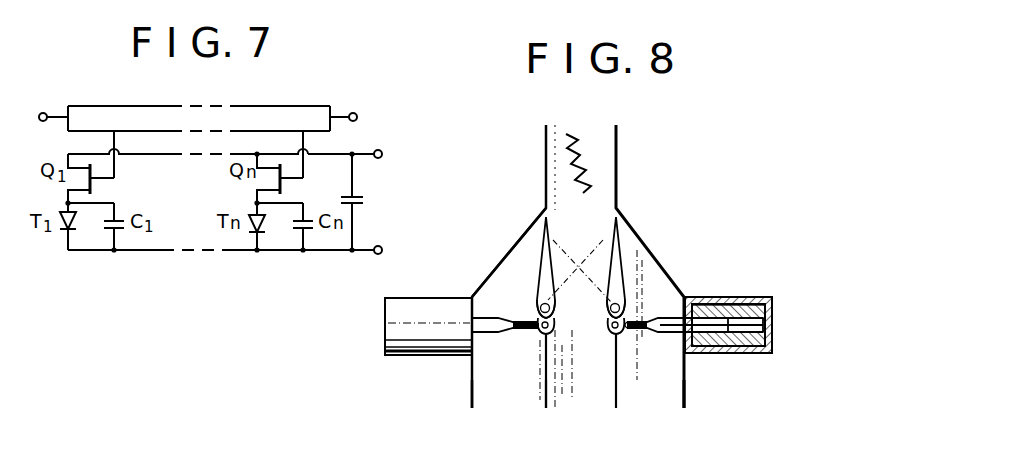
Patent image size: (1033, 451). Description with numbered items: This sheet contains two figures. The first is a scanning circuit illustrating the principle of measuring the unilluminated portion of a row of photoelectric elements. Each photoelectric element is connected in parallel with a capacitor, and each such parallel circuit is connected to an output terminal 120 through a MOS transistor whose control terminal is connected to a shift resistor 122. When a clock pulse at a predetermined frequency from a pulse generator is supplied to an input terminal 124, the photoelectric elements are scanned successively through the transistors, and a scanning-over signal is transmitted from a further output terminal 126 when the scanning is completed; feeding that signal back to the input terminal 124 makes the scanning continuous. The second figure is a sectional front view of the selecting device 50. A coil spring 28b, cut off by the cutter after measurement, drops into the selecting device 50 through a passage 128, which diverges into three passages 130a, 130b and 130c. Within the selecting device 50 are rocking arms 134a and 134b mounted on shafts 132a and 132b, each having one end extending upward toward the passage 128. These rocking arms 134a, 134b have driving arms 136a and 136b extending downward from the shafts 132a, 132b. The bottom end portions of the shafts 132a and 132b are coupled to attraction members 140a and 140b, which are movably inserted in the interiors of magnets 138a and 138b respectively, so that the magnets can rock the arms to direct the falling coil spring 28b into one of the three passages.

In FIG. 7, the output terminal 120 is at (381, 151).
In FIG. 7, the shift resistor 122 is at (301, 106).
In FIG. 7, the input terminal 124 is at (43, 112).
In FIG. 7, the output terminal 126 is at (357, 115).
In FIG. 8, the coil spring 28b is at (582, 148).
In FIG. 8, the passage 128 is at (607, 164).
In FIG. 8, the selecting device 50 is at (527, 228).
In FIG. 8, the passage 130a is at (650, 380).
In FIG. 8, the passage 130b is at (590, 380).
In FIG. 8, the passage 130c is at (508, 378).
In FIG. 8, the shaft 132a is at (625, 300).
In FIG. 8, the shaft 132b is at (538, 286).
In FIG. 8, the rocking arm 134a is at (620, 247).
In FIG. 8, the rocking arm 134b is at (541, 266).
In FIG. 8, the driving arm 136a is at (611, 330).
In FIG. 8, the driving arm 136b is at (540, 309).
In FIG. 8, the magnet 138a is at (728, 343).
In FIG. 8, the magnet 138b is at (433, 330).
In FIG. 8, the attraction member 140a is at (676, 318).
In FIG. 8, the attraction member 140b is at (496, 333).